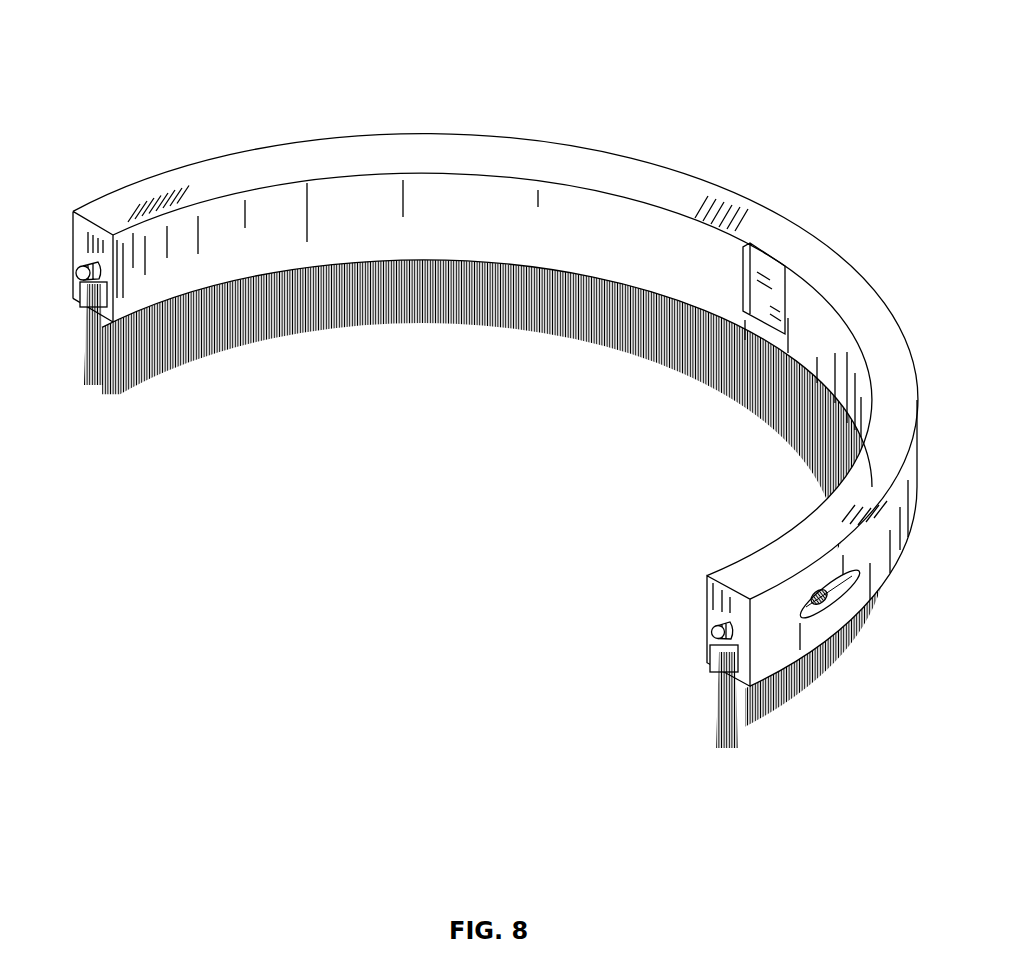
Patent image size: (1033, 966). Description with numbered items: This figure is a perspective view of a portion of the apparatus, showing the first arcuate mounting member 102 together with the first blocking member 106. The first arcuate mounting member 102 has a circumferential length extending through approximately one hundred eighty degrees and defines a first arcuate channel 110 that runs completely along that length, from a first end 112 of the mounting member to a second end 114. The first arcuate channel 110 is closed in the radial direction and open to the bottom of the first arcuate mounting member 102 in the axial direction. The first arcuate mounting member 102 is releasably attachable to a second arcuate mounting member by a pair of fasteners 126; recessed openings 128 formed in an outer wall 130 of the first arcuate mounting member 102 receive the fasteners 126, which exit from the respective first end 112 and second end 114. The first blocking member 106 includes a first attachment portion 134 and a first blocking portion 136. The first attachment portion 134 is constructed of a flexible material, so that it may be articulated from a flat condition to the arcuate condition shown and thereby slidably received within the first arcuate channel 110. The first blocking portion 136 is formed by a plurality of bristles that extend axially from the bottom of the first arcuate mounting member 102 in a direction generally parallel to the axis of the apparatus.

The first arcuate mounting member 102 is at (494, 423).
The first blocking member 106 is at (90, 349).
The first arcuate channel 110 is at (707, 652).
The first end 112 is at (713, 603).
The second end 114 is at (84, 248).
The fasteners 126 is at (78, 270).
The recessed openings 128 is at (836, 603).
The outer wall 130 is at (883, 551).
The first attachment portion 134 is at (729, 651).
The first blocking portion 136 is at (730, 746).